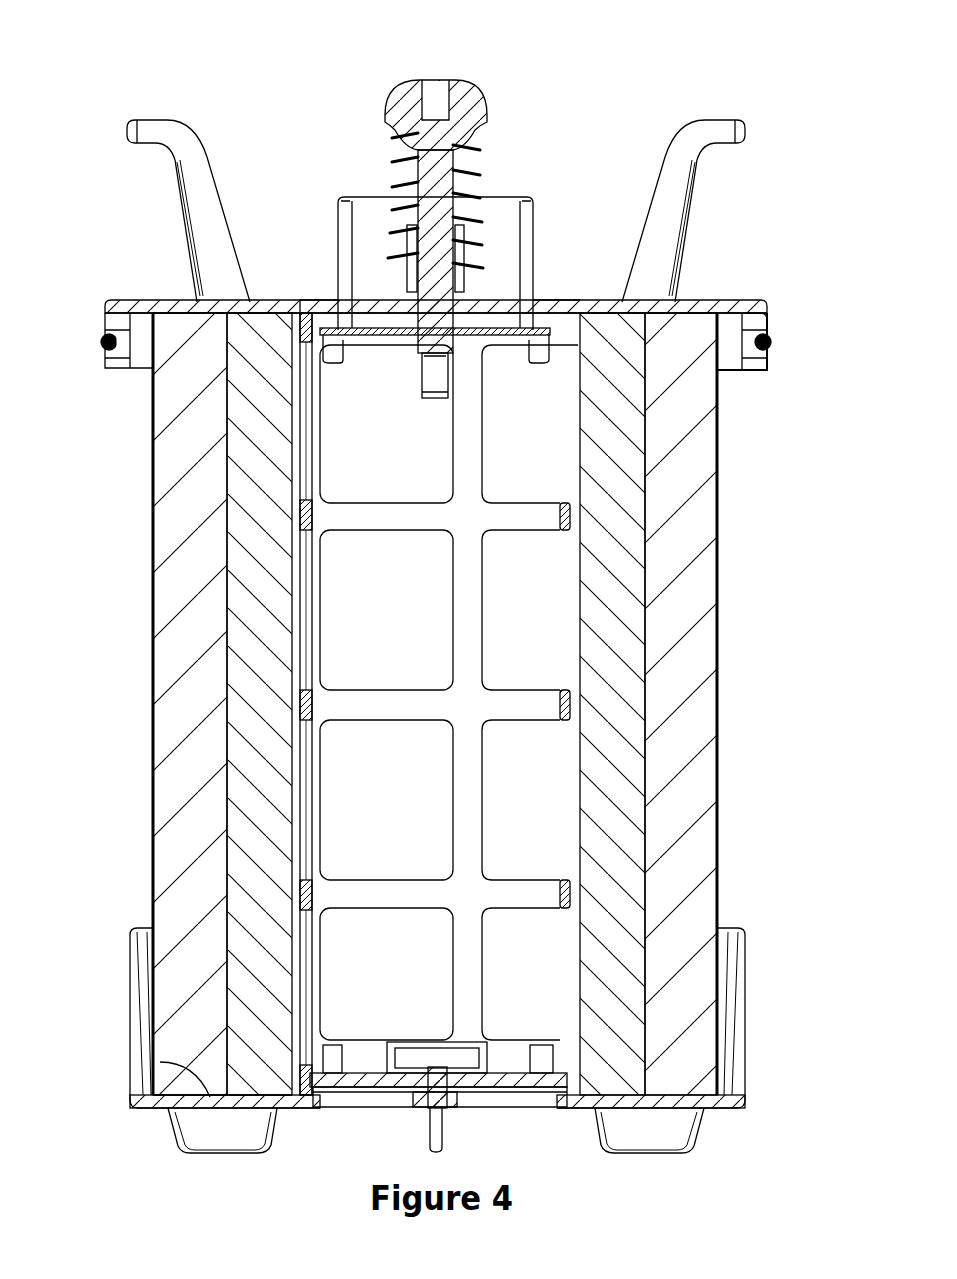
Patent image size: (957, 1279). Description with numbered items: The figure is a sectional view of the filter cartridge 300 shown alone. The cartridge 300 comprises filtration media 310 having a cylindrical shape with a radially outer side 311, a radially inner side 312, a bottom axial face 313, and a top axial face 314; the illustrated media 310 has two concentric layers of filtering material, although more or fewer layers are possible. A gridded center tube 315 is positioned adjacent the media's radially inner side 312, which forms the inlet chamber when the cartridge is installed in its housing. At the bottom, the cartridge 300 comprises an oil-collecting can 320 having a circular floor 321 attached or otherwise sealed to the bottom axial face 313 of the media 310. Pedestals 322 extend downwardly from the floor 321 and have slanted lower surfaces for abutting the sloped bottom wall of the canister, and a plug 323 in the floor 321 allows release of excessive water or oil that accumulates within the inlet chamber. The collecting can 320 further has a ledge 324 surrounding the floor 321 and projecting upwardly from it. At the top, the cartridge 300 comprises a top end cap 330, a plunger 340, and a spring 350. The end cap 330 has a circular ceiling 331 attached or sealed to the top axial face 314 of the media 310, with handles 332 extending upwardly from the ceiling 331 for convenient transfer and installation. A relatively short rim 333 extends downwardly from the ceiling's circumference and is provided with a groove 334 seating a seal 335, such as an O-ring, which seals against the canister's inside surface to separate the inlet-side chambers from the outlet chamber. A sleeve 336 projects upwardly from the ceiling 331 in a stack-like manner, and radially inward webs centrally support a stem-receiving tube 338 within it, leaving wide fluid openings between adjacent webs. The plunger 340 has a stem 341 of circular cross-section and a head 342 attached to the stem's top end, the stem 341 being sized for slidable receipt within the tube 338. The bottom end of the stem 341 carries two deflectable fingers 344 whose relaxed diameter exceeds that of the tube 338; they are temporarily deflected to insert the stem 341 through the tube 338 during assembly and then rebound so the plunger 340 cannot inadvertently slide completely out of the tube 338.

The filter cartridge 300 is at (96, 68).
The filtration media 310 is at (192, 626).
The radially outer side 311 is at (152, 538).
The radially inner side 312 is at (303, 548).
The bottom axial face 313 is at (205, 1093).
The top axial face 314 is at (151, 402).
The gridded center tube 315 is at (376, 518).
The bottom oil-collecting can 320 is at (740, 1116).
The circular floor 321 is at (294, 1100).
The pedestals 322 is at (206, 1128).
The plug 323 is at (444, 1103).
The ledge 324 is at (737, 967).
The top end cap 330 is at (126, 290).
The circular ceiling 331 is at (732, 298).
The handles 332 is at (148, 132).
The rim 333 is at (757, 316).
The groove 334 is at (102, 345).
The seal 335 is at (771, 342).
The sleeve 336 is at (525, 218).
The stem-receiving tube 338 is at (458, 277).
The plunger 340 is at (486, 80).
The stem 341 is at (434, 310).
The head 342 is at (470, 110).
The deflectable fingers 344 is at (431, 376).
The spring 350 is at (478, 150).